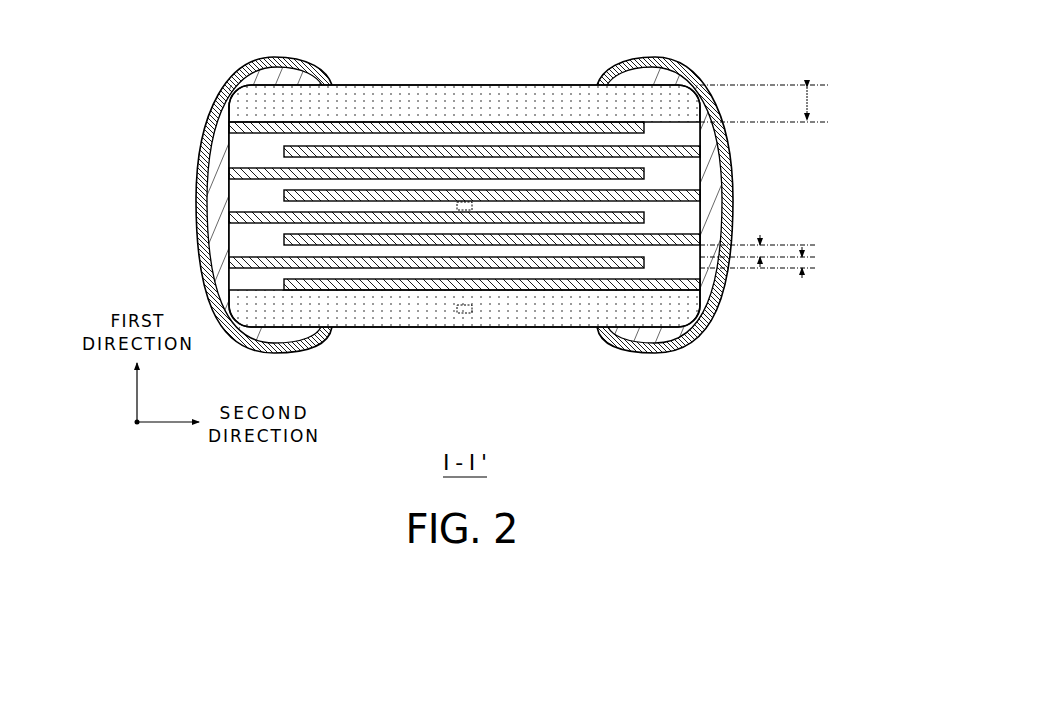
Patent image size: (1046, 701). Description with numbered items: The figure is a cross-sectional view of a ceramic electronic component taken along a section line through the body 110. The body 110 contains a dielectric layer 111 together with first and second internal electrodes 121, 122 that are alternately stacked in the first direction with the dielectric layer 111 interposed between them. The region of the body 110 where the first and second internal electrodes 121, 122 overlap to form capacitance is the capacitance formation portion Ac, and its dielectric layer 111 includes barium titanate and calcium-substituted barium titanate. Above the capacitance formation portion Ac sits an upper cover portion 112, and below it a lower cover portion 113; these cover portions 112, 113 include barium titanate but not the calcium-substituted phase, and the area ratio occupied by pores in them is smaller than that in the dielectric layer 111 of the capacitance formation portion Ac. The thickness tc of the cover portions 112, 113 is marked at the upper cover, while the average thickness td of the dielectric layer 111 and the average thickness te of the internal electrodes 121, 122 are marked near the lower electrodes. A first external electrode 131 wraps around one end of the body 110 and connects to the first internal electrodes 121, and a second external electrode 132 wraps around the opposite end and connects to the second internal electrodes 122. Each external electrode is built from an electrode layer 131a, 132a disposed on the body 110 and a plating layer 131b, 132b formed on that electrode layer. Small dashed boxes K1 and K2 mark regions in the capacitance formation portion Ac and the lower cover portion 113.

The body 110 is at (464, 196).
The dielectric layer 111 is at (333, 160).
The upper cover portion 112 is at (467, 100).
The lower cover portion 113 is at (510, 310).
The first internal electrode 121 is at (507, 130).
The second internal electrode 122 is at (575, 152).
The first external electrode 131 is at (218, 205).
The electrode layer 131a is at (203, 175).
The plating layer 131b is at (196, 206).
The second external electrode 132 is at (702, 205).
The electrode layer 132a is at (723, 178).
The plating layer 132b is at (734, 204).
The capacitance formation portion Ac is at (562, 290).
The region K1 is at (457, 206).
The region K2 is at (457, 312).
The thickness of the cover portions tc is at (765, 103).
The average thickness of the dielectric layer td is at (757, 251).
The average thickness of the internal electrode te is at (761, 262).